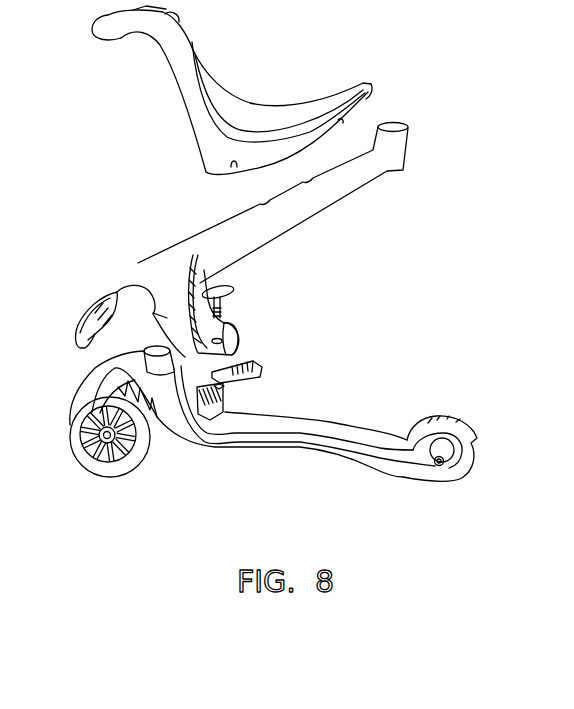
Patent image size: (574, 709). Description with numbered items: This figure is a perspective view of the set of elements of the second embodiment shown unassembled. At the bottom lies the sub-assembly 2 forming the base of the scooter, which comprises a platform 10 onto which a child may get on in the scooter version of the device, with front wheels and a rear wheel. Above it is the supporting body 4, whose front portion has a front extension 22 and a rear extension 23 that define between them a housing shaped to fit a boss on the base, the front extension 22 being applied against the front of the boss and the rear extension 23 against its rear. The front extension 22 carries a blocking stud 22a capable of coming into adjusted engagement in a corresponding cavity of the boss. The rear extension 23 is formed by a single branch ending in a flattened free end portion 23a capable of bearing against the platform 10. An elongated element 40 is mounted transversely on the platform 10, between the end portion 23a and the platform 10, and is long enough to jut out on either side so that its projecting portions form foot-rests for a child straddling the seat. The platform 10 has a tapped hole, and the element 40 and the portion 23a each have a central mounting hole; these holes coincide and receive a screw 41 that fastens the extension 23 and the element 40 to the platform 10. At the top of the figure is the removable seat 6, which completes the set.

The sub-assembly 2 is at (154, 485).
The supporting body 4 is at (358, 192).
The removable seat 6 is at (240, 72).
The platform 10 is at (346, 442).
The front extension 22 is at (75, 330).
The blocking stud 22a is at (92, 320).
The rear extension 23 is at (184, 356).
The flattened free end portion 23a is at (238, 328).
The elongated element 40 is at (270, 380).
The screw 41 is at (235, 292).